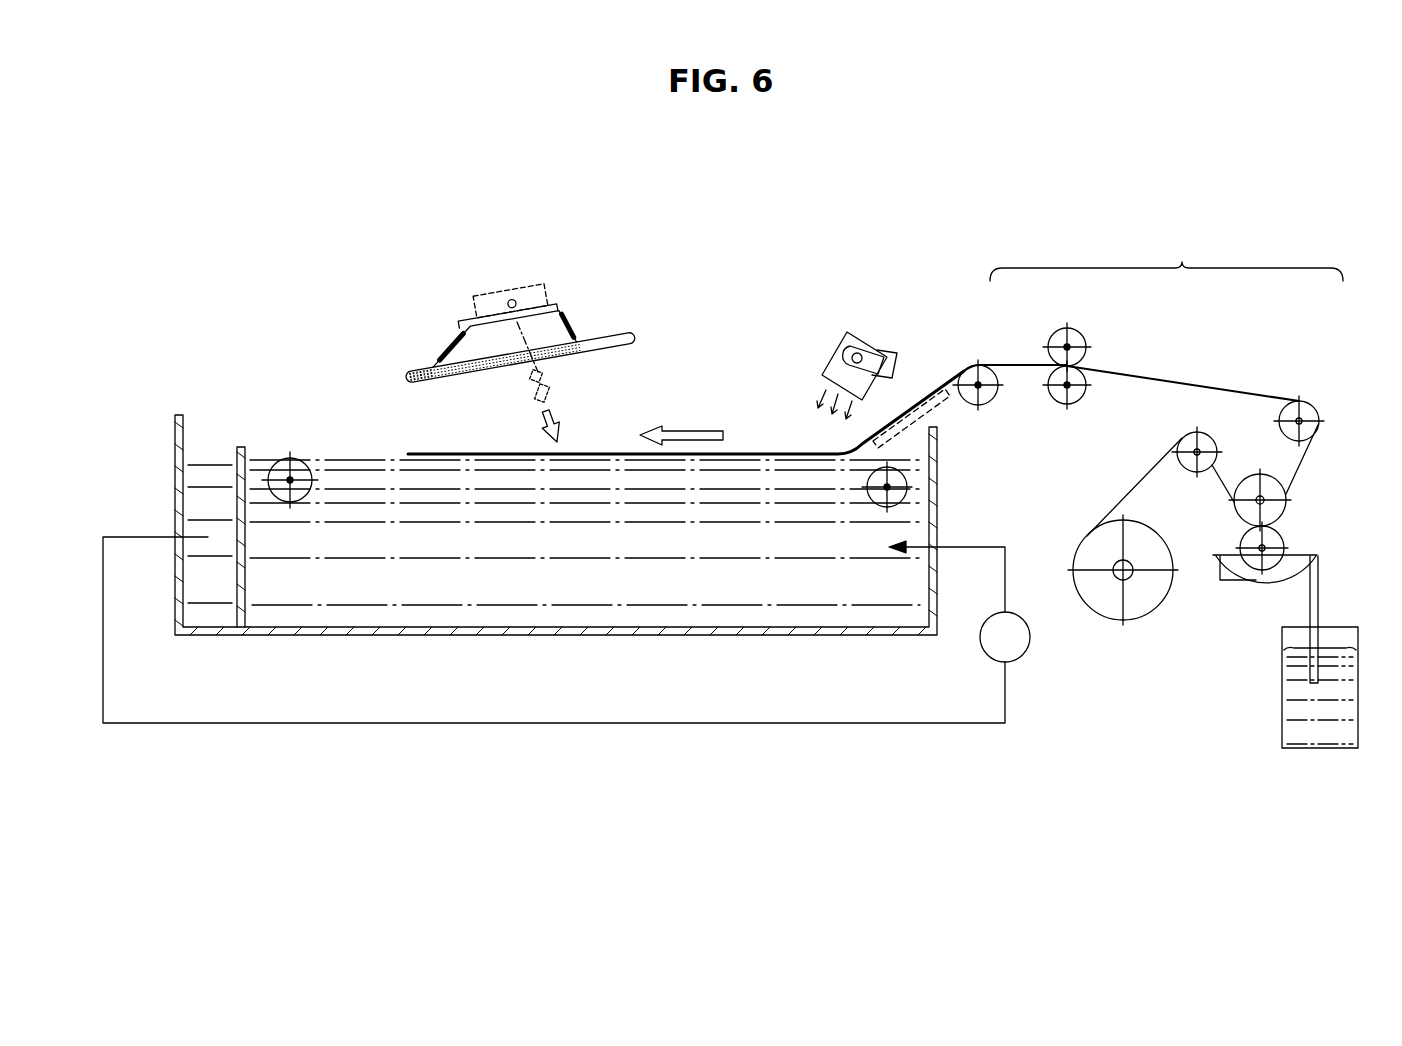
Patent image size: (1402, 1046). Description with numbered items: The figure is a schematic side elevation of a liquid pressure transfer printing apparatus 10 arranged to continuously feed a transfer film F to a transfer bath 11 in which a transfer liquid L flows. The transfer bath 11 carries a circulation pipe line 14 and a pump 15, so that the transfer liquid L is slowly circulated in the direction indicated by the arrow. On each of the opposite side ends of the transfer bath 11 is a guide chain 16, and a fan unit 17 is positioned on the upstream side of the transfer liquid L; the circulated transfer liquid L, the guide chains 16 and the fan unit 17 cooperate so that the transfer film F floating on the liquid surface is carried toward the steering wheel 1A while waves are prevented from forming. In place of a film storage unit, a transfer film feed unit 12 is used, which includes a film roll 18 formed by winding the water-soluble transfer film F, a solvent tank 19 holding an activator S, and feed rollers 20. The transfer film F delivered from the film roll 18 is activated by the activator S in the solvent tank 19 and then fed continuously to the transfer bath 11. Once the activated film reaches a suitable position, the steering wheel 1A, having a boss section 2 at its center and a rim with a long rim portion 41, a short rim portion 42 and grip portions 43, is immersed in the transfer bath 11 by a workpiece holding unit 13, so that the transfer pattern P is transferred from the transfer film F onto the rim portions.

The liquid pressure transfer printing apparatus 10 is at (252, 200).
The transfer bath 11 is at (786, 636).
The transfer film feed unit 12 is at (1166, 254).
The workpiece holding unit 13 is at (487, 301).
The circulation pipe line 14 is at (533, 724).
The pump 15 is at (1021, 648).
The guide chain 16 is at (775, 500).
The fan unit 17 is at (838, 372).
The film roll 18 is at (1148, 600).
The solvent tank 19 is at (1308, 572).
The feed rollers 20 is at (1061, 337).
The boss section 2 is at (550, 321).
The steering wheel 1A is at (621, 341).
The long rim portion 41 is at (598, 351).
The short rim portion 42 is at (425, 370).
The grip portions 43 is at (499, 367).
The transfer pattern P is at (1155, 364).
The transfer film F is at (436, 452).
The transfer liquid L is at (608, 595).
The activator S is at (1290, 703).